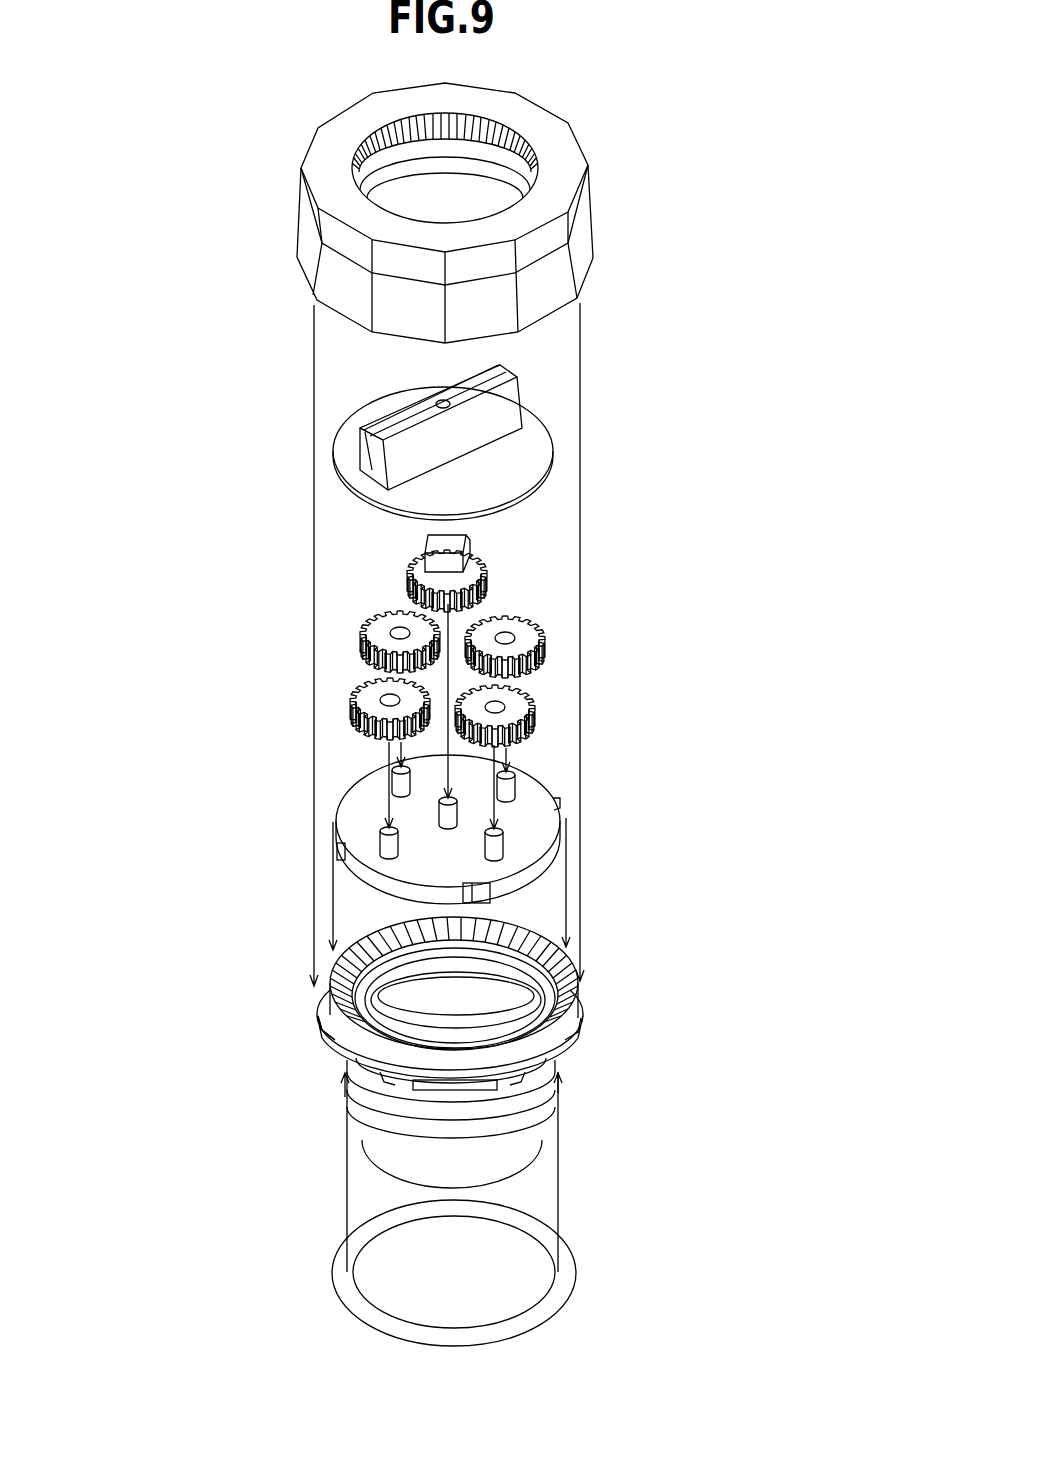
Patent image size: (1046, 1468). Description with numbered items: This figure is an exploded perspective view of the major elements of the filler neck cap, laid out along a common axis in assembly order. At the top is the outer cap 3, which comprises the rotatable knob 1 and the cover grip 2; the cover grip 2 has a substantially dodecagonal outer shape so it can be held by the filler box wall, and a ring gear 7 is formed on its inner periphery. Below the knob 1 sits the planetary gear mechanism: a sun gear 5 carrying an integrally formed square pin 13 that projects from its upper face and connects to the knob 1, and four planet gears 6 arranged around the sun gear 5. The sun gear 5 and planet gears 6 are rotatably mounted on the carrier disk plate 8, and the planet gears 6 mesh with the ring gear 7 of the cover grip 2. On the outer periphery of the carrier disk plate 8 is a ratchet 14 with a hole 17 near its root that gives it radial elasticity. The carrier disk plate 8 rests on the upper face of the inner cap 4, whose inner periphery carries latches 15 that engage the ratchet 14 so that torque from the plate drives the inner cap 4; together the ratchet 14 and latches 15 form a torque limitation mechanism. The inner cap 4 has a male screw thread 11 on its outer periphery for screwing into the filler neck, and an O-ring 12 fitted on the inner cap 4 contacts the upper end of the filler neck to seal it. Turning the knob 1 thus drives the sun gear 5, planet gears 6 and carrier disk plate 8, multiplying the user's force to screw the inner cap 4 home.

The rotatable knob 1 is at (357, 414).
The cover grip 2 is at (325, 187).
The outer cap 3 is at (672, 36).
The inner cap 4 is at (604, 1006).
The sun gear 5 is at (487, 560).
The planet gears 6 is at (367, 702).
The ring gear 7 is at (373, 135).
The carrier disk plate 8 is at (363, 793).
The male screw thread 11 is at (538, 1112).
The O-ring 12 is at (557, 1292).
The square pin 13 is at (437, 535).
The ratchet 14 is at (478, 893).
The latches 15 is at (335, 985).
The hole 17 is at (558, 797).